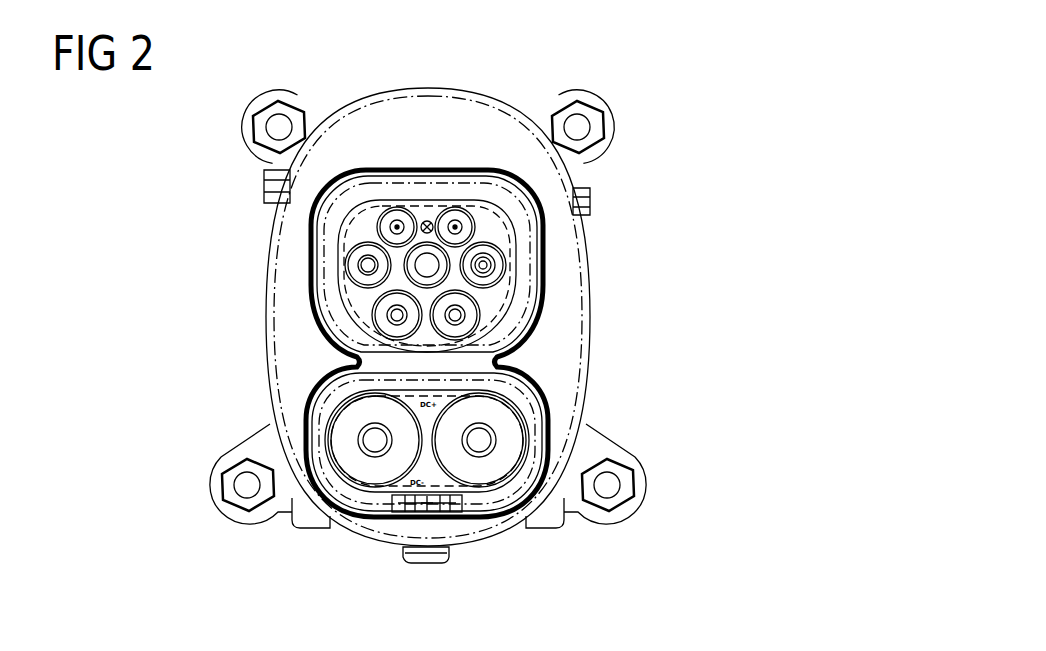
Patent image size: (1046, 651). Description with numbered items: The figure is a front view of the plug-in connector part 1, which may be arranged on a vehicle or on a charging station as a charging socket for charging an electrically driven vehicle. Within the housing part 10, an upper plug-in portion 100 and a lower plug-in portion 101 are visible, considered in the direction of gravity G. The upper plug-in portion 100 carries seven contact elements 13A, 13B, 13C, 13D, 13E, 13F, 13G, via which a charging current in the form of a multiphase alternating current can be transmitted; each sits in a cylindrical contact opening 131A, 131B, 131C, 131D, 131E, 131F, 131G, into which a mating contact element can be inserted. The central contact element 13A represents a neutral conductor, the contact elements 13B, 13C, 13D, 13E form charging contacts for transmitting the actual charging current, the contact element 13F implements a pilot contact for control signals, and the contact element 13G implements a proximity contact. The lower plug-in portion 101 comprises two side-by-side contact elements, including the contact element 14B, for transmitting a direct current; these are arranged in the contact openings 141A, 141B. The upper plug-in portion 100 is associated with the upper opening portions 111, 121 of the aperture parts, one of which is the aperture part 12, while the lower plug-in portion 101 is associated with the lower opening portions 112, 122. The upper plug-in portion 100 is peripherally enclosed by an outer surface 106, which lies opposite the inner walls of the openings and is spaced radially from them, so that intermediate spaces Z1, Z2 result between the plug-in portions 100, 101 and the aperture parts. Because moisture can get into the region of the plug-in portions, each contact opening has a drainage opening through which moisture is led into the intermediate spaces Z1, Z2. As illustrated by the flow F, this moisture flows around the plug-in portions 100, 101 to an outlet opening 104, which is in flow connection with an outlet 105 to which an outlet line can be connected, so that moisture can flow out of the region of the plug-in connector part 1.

The plug-in connector part 1 is at (600, 75).
The housing part 10 is at (237, 513).
The aperture part 12 is at (397, 112).
The central contact element 13A is at (428, 256).
The contact element 13B is at (362, 262).
The contact element 13C is at (395, 325).
The contact element 13D is at (462, 317).
The contact element 13E is at (490, 266).
The contact element 13F is at (500, 228).
The contact element 13G is at (388, 226).
The contact opening 131A is at (503, 257).
The contact opening 131B is at (352, 265).
The contact opening 131C is at (372, 318).
The contact opening 131D is at (462, 334).
The contact opening 131E is at (505, 283).
The contact opening 131F is at (458, 221).
The contact opening 131G is at (390, 216).
The contact element 14B is at (478, 448).
The contact opening 141A is at (373, 472).
The contact opening 141B is at (497, 452).
The upper plug-in portion 100 is at (512, 236).
The lower plug-in portion 101 is at (395, 500).
The outlet opening 104 is at (432, 502).
The outlet 105 is at (427, 514).
The outer surface 106 is at (575, 311).
The upper opening portion 111 is at (322, 283).
The upper opening portion 121 is at (322, 283).
The lower opening portion 112 is at (290, 508).
The lower opening portion 122 is at (373, 477).
The flow F is at (538, 434).
The direction of gravity G is at (128, 277).
The intermediate space Z1 is at (352, 160).
The intermediate space Z2 is at (555, 512).